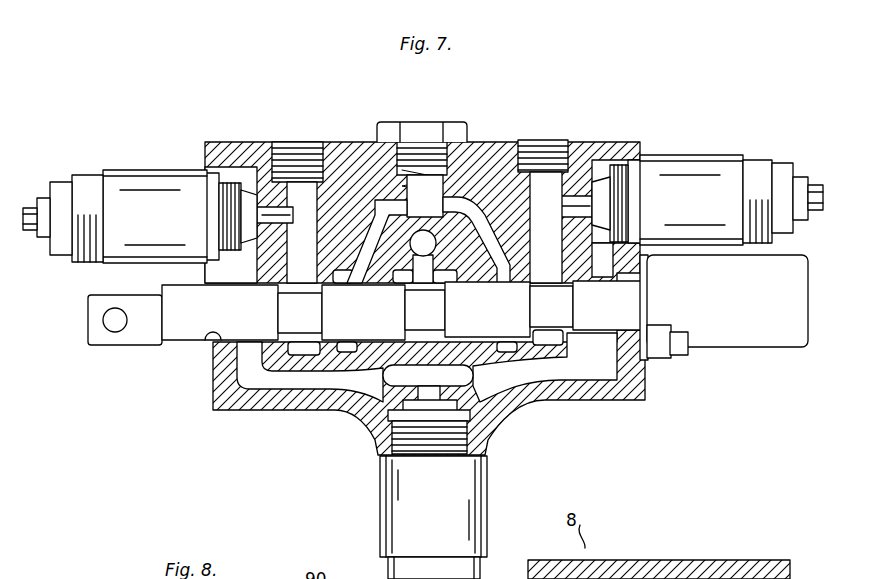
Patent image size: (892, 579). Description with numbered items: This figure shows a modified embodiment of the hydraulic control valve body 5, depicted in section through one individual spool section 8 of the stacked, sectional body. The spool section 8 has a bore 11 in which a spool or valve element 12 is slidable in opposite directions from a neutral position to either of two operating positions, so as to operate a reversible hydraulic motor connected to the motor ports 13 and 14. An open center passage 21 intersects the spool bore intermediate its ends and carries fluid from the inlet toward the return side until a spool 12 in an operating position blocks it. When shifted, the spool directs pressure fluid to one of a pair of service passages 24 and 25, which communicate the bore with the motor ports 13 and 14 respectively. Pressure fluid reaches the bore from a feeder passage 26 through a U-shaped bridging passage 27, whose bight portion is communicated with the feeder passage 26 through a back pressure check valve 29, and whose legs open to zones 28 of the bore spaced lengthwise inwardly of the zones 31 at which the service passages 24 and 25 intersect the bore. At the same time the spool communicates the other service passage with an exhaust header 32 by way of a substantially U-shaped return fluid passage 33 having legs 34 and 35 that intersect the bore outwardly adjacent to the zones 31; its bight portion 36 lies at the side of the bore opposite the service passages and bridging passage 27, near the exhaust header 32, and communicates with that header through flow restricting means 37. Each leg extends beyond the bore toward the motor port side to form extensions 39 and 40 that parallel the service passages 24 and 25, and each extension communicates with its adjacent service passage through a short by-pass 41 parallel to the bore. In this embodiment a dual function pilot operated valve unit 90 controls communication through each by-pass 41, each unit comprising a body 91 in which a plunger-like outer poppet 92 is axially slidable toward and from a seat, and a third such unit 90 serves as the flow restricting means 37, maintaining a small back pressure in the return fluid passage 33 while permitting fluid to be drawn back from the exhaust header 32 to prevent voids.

The body of a hydraulic control valve 5 is at (609, 116).
The spool section 8 is at (483, 142).
The bore 11 is at (210, 340).
The spool or valve element 12 is at (448, 312).
The motor port 13 is at (548, 140).
The motor port 14 is at (300, 142).
The open center passage 21 is at (418, 285).
The service passage 24 is at (556, 246).
The service passage 25 is at (312, 252).
The feeder passage 26 is at (433, 252).
The U-shaped bridging passage 27 is at (394, 218).
The zones of the spool bore 28 is at (347, 343).
The back pressure check valve 29 is at (434, 207).
The zones 31 is at (312, 352).
The exhaust header 32 is at (414, 383).
The U-shaped return fluid passage 33 is at (553, 384).
The leg of the return fluid passage 34 is at (613, 354).
The leg of the return fluid passage 35 is at (258, 373).
The bight portion of the return fluid passage 36 is at (488, 398).
The flow restricting means 37 is at (468, 411).
The extension of the return fluid passage 39 is at (614, 266).
The extension of the return fluid passage 40 is at (256, 278).
The by-pass 41 is at (270, 203).
The dual function pilot operated valve unit 90 is at (423, 335).
The body 91 is at (137, 172).
The plunger-like outer poppet 92 is at (240, 165).